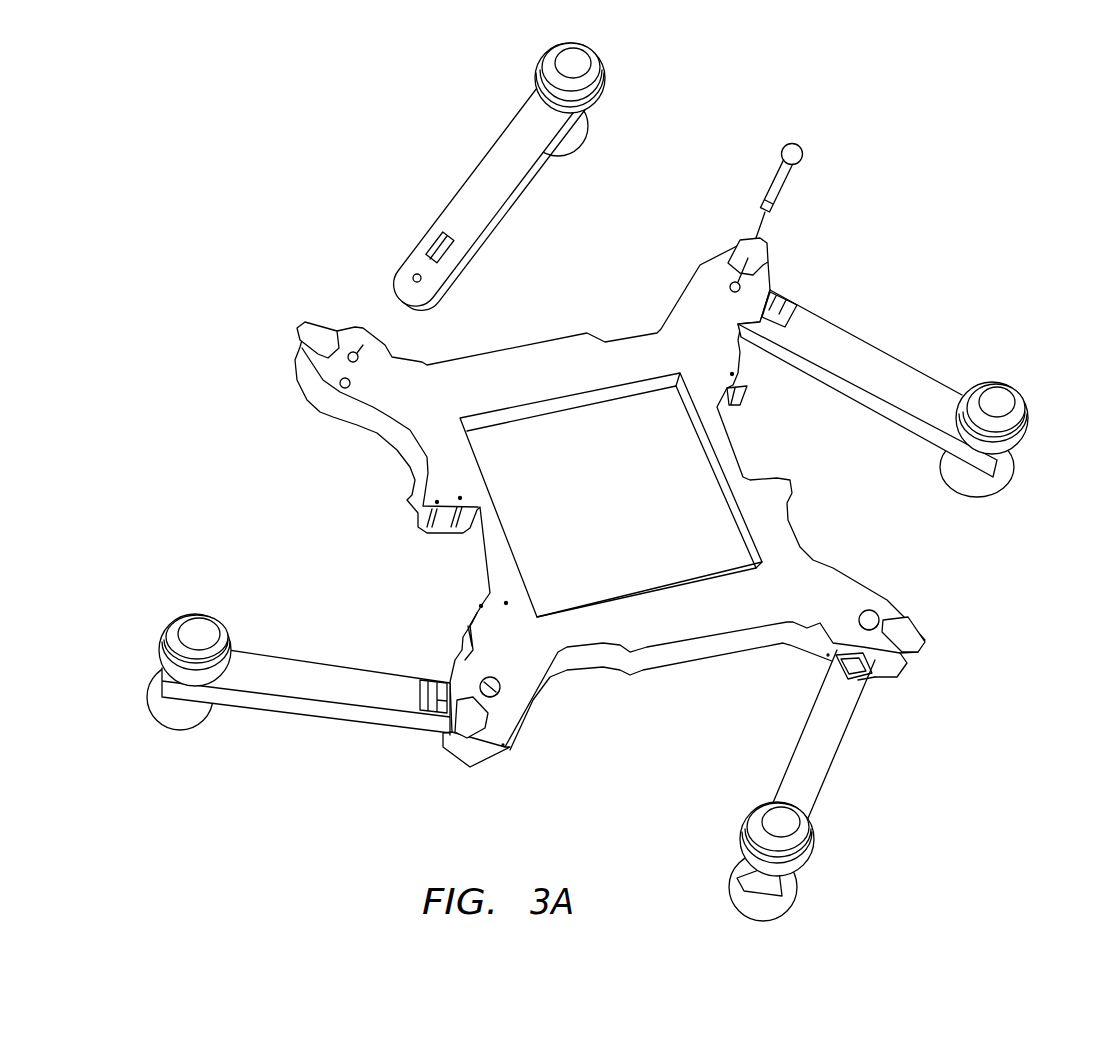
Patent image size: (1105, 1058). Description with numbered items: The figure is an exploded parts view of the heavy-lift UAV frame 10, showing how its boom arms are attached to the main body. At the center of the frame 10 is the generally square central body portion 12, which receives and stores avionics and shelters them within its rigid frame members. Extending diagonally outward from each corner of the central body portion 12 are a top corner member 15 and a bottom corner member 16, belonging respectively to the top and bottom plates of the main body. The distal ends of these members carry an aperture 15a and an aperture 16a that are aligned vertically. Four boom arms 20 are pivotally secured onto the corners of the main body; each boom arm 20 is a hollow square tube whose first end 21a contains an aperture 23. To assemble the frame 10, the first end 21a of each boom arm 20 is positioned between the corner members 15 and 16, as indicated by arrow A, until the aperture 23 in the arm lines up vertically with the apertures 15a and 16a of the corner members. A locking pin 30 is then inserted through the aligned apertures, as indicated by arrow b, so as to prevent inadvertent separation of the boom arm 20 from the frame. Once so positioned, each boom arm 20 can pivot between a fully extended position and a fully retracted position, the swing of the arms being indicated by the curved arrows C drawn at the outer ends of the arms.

The heavy-lift UAV frame 10 is at (374, 134).
The central body portion 12 is at (614, 440).
The top corner member 15 is at (506, 714).
The aperture 15a is at (358, 362).
The bottom corner member 16 is at (472, 763).
The aperture 16a is at (344, 389).
The boom arm 20 is at (587, 482).
The first end 21a is at (432, 307).
The aperture 23 is at (410, 276).
The locking pin 30 is at (775, 190).
The arrow a A is at (378, 330).
The arrow b is at (755, 238).
The arm rotation direction C is at (1093, 338).